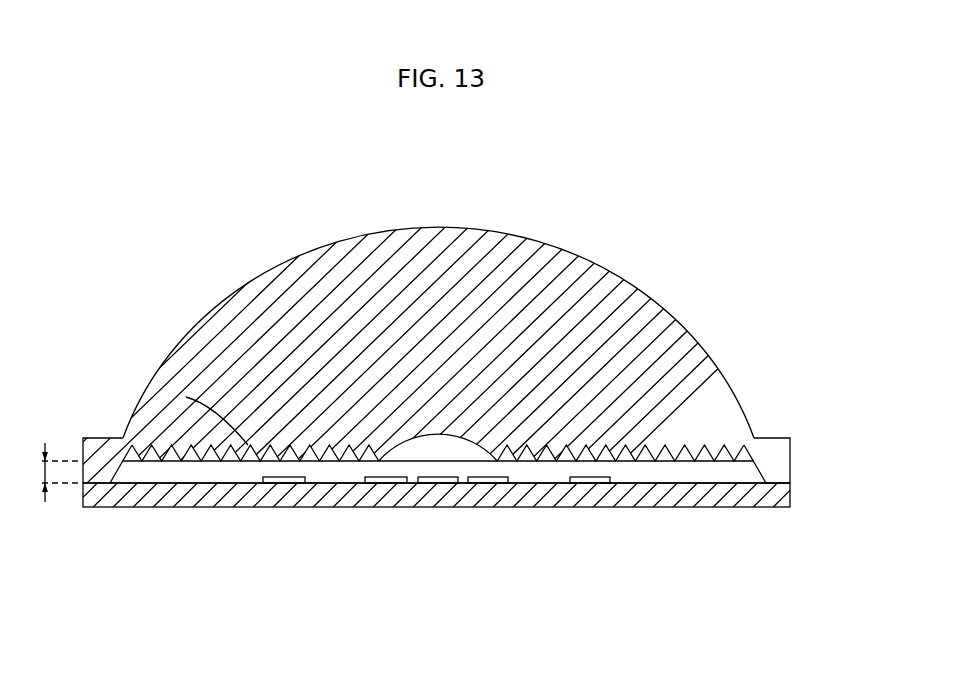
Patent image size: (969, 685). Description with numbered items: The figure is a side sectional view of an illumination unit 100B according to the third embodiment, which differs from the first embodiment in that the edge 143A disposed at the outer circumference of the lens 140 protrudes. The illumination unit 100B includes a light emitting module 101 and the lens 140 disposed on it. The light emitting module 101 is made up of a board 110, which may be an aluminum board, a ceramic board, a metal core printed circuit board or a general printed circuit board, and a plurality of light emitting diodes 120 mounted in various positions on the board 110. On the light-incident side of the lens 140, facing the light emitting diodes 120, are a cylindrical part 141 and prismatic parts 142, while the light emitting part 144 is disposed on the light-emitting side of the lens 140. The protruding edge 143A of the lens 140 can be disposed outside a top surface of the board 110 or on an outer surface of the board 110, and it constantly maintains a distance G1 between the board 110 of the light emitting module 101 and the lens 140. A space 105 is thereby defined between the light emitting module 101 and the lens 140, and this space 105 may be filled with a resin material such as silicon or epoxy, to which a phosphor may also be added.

The illumination unit 100B is at (178, 159).
The light emitting module 101 is at (168, 519).
The space 105 is at (548, 475).
The board 110 is at (290, 488).
The light emitting diodes 120 is at (483, 483).
The lens 140 is at (663, 297).
The cylindrical part 141 is at (416, 437).
The prismatic parts 142 is at (605, 455).
The edge 143A is at (778, 469).
The light emitting part 144 is at (716, 364).
The distance G1 is at (44, 472).